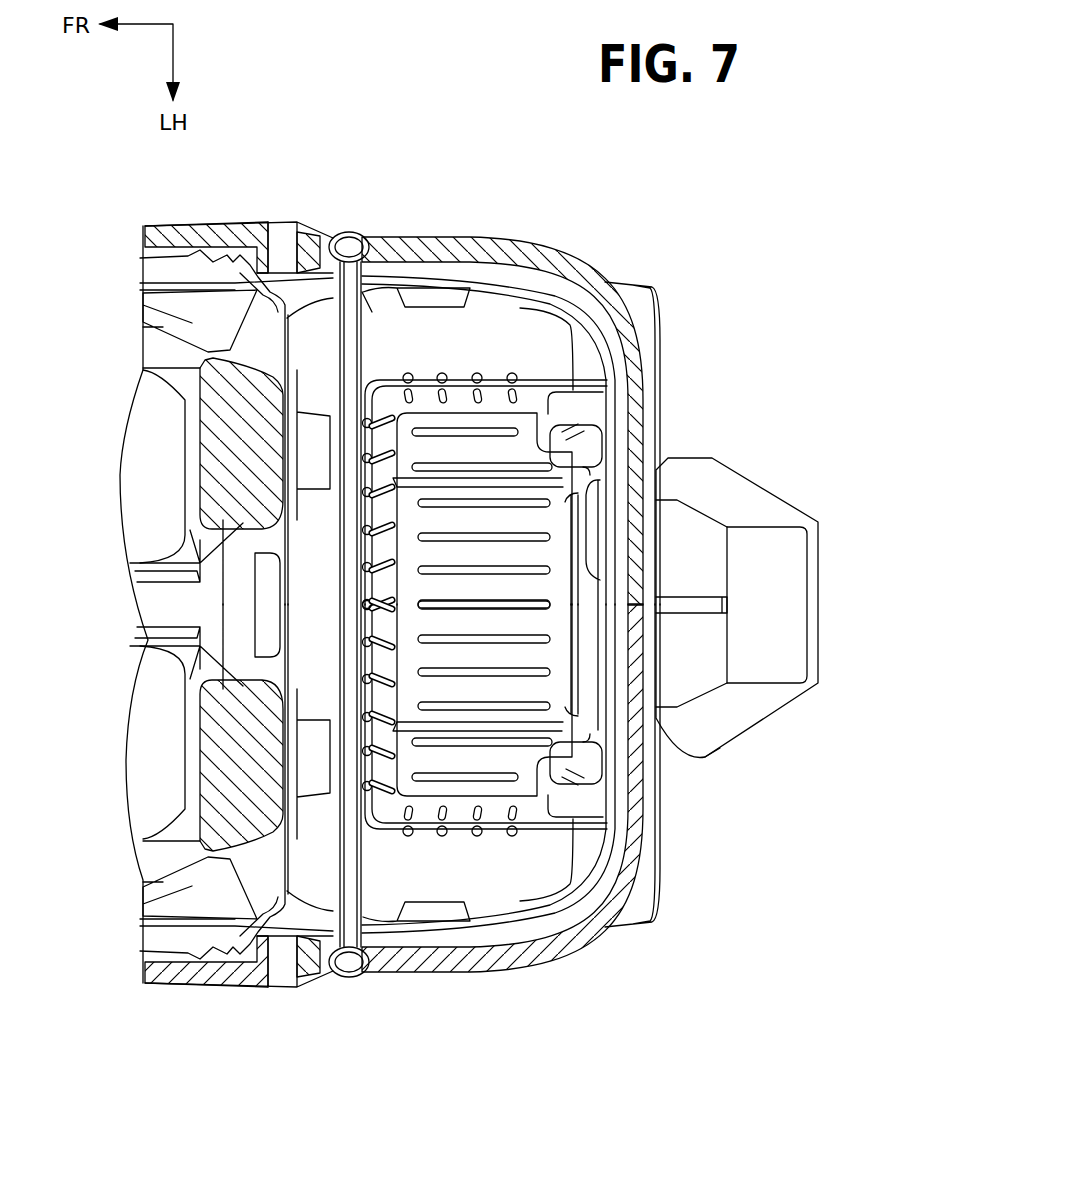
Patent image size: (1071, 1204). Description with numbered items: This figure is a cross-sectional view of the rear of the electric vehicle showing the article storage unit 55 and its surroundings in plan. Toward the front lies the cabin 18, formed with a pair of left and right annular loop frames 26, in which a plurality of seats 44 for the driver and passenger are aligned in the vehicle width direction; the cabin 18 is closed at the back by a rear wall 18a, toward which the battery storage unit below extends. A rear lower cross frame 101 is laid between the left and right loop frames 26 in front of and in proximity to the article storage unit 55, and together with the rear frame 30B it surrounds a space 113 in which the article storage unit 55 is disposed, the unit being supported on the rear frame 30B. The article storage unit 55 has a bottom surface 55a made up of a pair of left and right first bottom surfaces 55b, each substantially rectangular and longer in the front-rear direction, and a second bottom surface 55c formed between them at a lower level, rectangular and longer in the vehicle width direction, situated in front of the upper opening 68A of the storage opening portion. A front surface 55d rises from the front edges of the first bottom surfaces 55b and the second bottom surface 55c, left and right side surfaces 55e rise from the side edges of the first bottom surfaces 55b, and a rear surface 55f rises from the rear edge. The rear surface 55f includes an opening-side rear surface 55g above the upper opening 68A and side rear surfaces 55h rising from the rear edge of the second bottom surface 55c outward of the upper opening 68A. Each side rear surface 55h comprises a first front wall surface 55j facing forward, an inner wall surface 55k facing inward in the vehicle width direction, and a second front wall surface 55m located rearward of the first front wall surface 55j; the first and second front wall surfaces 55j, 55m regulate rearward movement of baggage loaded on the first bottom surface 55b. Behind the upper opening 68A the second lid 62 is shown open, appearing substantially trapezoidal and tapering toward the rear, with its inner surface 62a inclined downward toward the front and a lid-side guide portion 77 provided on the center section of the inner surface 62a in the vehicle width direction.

The cabin 18 is at (128, 348).
The rear wall of the cabin 18a is at (243, 605).
The seats 44 is at (143, 446).
The loop frames 26 is at (350, 982).
The rear frame 30B is at (497, 270).
The article storage unit 55 is at (603, 472).
The bottom surface 55a is at (463, 800).
The first bottom surfaces 55b is at (545, 393).
The second bottom surface 55c is at (463, 690).
The front surface 55d is at (330, 312).
The side surfaces 55e is at (430, 382).
The rear surface 55f is at (600, 745).
The opening-side rear surface 55g is at (742, 737).
The side rear surfaces 55h is at (578, 418).
The first front wall surface 55j is at (567, 398).
The inner wall surface 55k is at (572, 432).
The second front wall surface 55m is at (588, 466).
The second lid 62 is at (797, 500).
The inner surface of the second lid 62a is at (708, 578).
The upper opening 68A is at (540, 522).
The lid-side guide portion 77 is at (700, 608).
The rear lower cross frame 101 is at (372, 315).
The space 113 is at (527, 330).